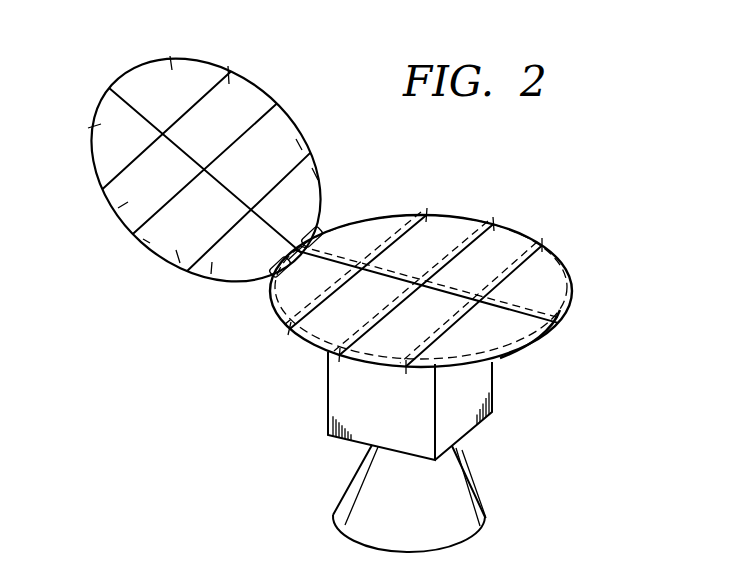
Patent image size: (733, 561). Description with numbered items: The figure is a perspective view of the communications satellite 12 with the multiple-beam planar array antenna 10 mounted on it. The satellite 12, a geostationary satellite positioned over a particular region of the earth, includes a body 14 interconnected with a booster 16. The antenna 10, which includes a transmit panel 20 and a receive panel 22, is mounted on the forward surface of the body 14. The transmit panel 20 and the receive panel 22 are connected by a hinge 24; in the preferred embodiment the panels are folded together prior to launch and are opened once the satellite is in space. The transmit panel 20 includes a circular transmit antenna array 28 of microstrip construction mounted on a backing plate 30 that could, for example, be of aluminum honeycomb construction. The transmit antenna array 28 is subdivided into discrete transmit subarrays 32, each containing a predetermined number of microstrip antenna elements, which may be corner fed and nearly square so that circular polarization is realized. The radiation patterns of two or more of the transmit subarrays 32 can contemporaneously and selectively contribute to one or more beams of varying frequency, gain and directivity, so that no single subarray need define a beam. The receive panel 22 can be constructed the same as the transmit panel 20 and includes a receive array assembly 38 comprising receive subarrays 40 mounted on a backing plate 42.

The multiple-beam planar array antenna 10 is at (595, 250).
The communications satellite 12 is at (598, 437).
The body 14 is at (490, 402).
The booster 16 is at (386, 508).
The transmit panel 20 is at (308, 377).
The receive panel 22 is at (297, 112).
The hinge 24 is at (331, 217).
The transmit antenna array 28 is at (504, 244).
The backing plate 30 is at (530, 347).
The transmit subarrays 32 is at (393, 221).
The receive array assembly 38 is at (248, 102).
The receive subarrays 40 is at (170, 60).
The backing plate 42 is at (145, 240).